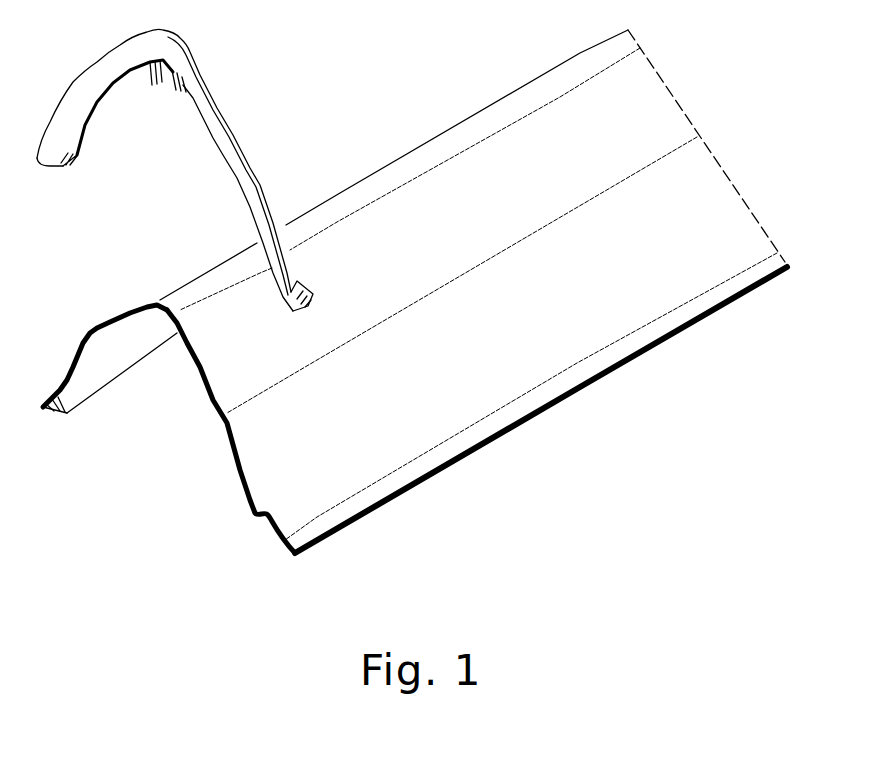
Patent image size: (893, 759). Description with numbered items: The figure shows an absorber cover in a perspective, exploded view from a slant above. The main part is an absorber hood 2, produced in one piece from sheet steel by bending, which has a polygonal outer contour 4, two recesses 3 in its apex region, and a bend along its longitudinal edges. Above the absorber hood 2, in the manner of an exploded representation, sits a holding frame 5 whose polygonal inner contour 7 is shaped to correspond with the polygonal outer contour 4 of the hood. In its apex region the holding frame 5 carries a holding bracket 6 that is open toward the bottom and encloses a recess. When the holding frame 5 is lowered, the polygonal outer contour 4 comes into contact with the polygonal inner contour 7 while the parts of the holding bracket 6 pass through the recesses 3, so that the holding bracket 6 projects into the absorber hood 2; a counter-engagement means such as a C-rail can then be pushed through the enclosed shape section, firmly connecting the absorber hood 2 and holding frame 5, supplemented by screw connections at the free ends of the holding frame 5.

The absorber hood 2 is at (490, 392).
The recesses 3 is at (171, 313).
The polygonal outer contour 4 is at (92, 333).
The holding frame 5 is at (237, 118).
The holding bracket 6 is at (172, 85).
The polygonal inner contour 7 is at (108, 93).